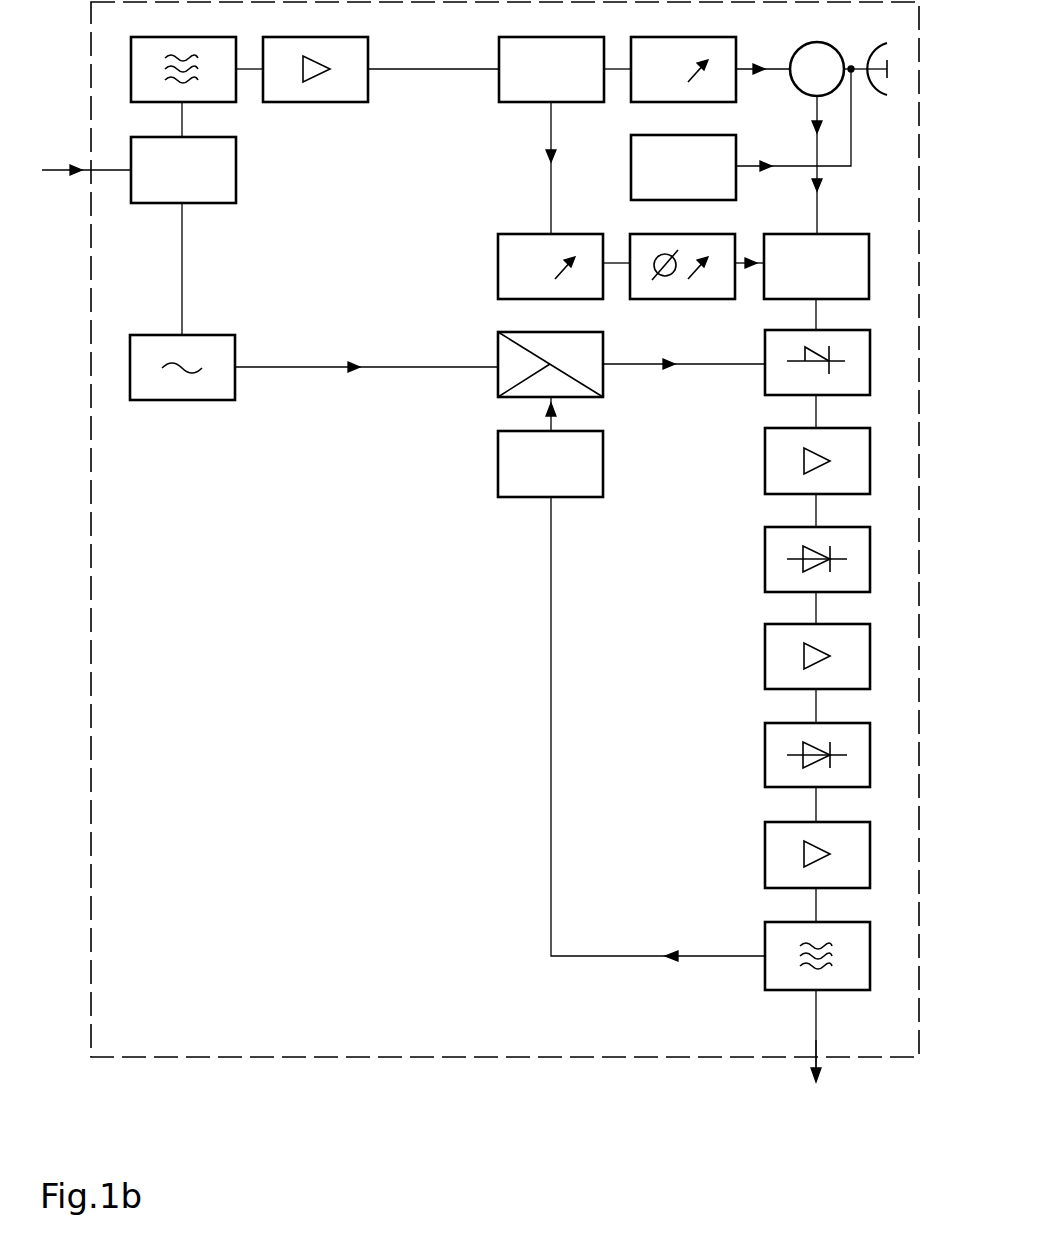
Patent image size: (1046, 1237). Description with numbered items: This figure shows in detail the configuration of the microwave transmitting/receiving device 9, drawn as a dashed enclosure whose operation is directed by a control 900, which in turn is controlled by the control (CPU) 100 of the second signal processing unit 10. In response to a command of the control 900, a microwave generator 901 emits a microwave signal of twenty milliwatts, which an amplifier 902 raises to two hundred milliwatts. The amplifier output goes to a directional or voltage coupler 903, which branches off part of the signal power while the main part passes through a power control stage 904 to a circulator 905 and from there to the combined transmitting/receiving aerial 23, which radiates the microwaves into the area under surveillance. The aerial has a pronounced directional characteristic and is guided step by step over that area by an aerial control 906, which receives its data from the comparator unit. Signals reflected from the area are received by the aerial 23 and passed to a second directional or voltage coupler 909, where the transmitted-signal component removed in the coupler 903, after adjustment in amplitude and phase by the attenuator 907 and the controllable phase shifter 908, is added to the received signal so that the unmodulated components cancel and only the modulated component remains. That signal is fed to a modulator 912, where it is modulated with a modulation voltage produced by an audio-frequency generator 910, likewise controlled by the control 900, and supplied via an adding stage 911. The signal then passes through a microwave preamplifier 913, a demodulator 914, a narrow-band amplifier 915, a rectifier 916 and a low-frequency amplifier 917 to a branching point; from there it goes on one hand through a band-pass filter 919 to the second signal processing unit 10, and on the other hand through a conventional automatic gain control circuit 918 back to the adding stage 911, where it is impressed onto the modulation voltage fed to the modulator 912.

The microwave transmitting/receiving device 9 is at (622, 1058).
The control (CPU) 100 is at (86, 189).
The control 900 is at (236, 187).
The microwave generator 901 is at (207, 104).
The amplifier 902 is at (333, 104).
The directional or voltage coupler 903 is at (527, 104).
The power control stage 904 is at (647, 104).
The circulator 905 is at (800, 92).
The aerial control 906 is at (631, 167).
The combined transmitting/receiving aerial 23 is at (873, 96).
The attenuator 907 is at (498, 268).
The controllable phase shifter 908 is at (680, 300).
The directional or voltage coupler 909 is at (778, 300).
The audio-frequency generator 910 is at (237, 348).
The adding stage 911 is at (498, 353).
The modulator 912 is at (764, 378).
The microwave preamplifier 913 is at (764, 460).
The demodulator 914 is at (764, 559).
The narrow-band amplifier 915 is at (764, 656).
The rectifier 916 is at (764, 755).
The low-frequency amplifier 917 is at (764, 855).
The automatic gain control circuit 918 is at (498, 465).
The band-pass filter 919 is at (764, 975).
The second signal processing unit 10 is at (839, 1062).